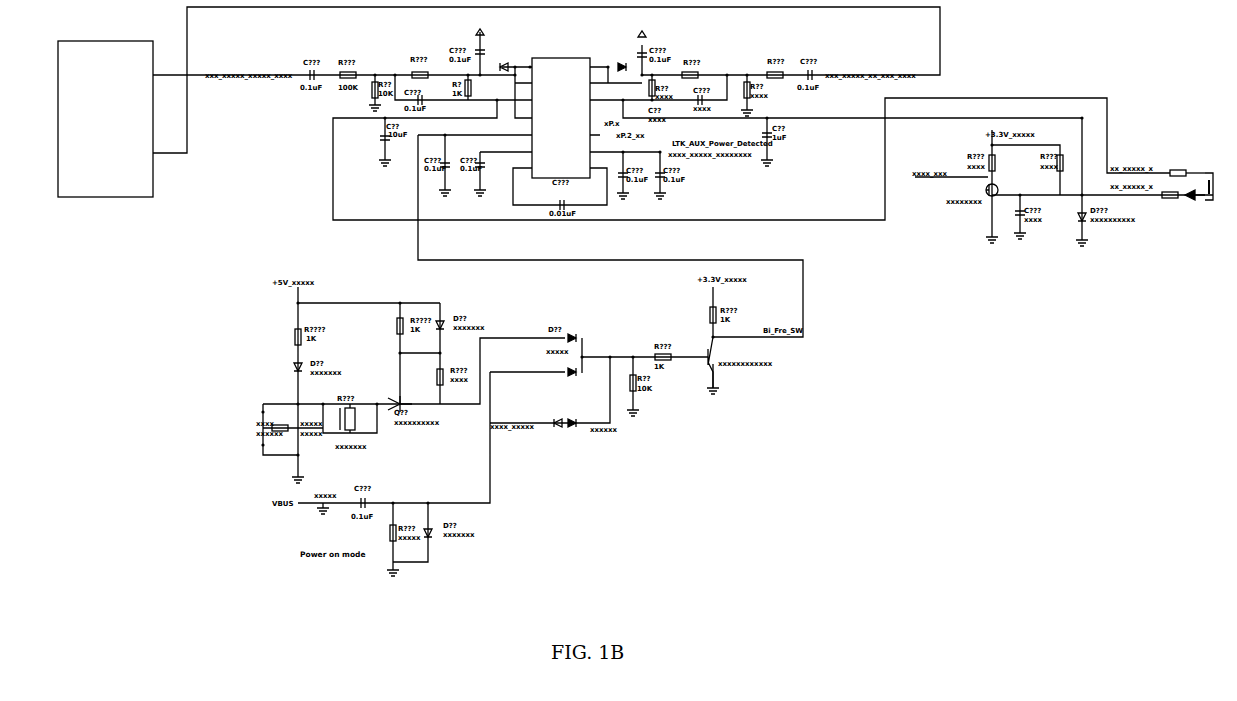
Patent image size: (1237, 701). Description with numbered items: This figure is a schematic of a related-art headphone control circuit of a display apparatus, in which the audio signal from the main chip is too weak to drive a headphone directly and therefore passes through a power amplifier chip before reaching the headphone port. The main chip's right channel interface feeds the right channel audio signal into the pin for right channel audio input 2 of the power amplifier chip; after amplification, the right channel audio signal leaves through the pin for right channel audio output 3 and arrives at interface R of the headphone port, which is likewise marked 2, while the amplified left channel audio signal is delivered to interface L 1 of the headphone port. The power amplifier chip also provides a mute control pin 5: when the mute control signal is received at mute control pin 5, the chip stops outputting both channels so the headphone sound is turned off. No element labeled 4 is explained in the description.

The interface L 1 is at (101, 119).
The pin for right channel audio input 2 is at (561, 118).
The pin for right channel audio output 3 is at (1205, 177).
The switching transistor 4 is at (715, 362).
The mute control pin 5 is at (979, 189).